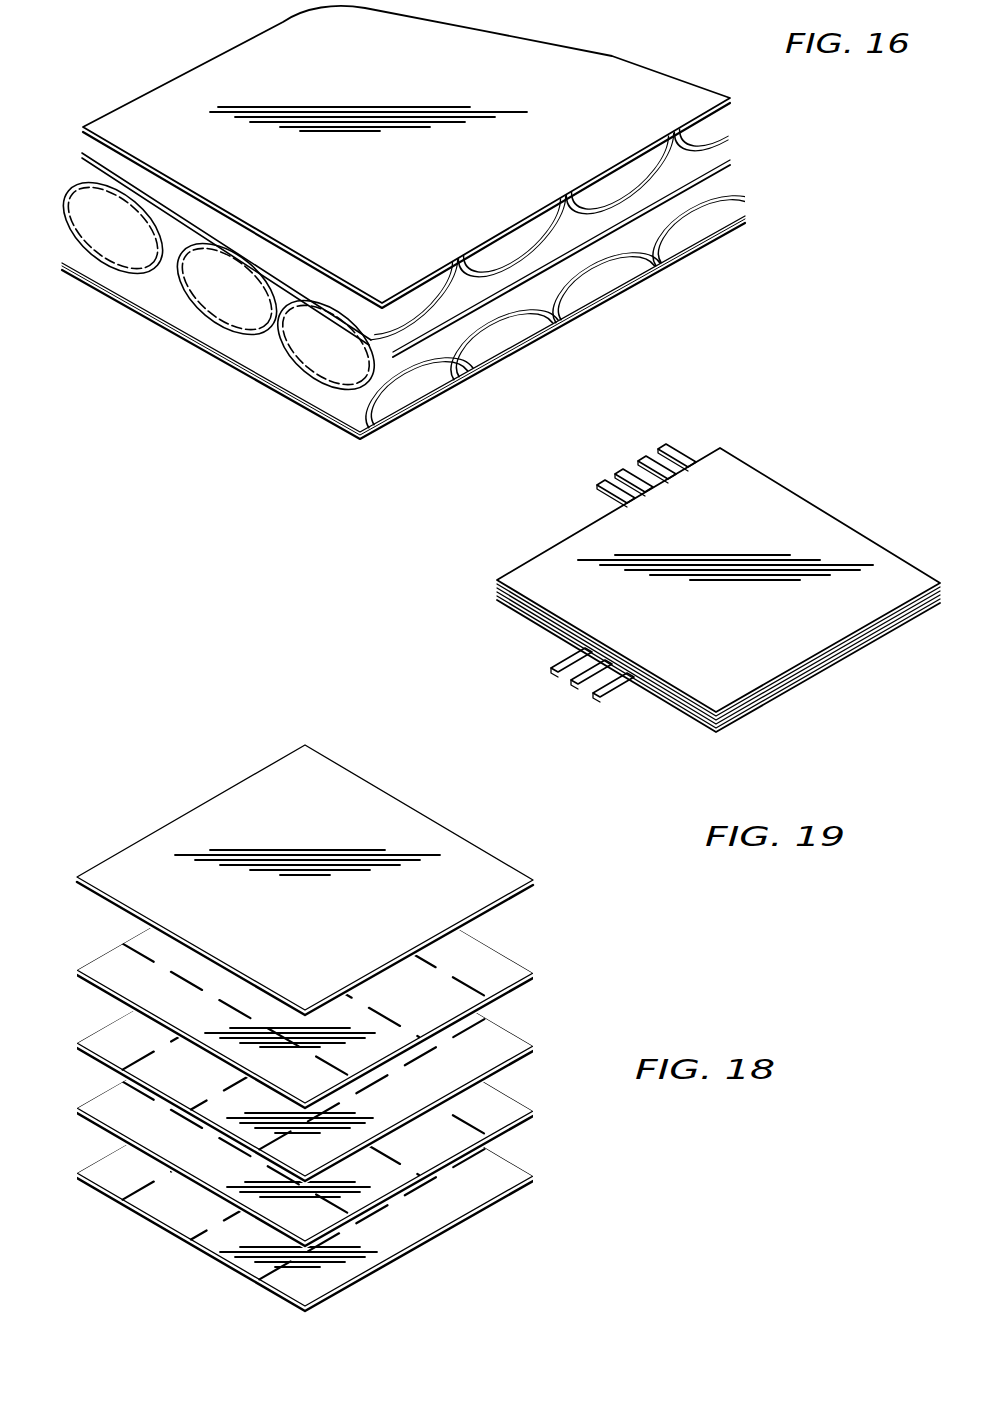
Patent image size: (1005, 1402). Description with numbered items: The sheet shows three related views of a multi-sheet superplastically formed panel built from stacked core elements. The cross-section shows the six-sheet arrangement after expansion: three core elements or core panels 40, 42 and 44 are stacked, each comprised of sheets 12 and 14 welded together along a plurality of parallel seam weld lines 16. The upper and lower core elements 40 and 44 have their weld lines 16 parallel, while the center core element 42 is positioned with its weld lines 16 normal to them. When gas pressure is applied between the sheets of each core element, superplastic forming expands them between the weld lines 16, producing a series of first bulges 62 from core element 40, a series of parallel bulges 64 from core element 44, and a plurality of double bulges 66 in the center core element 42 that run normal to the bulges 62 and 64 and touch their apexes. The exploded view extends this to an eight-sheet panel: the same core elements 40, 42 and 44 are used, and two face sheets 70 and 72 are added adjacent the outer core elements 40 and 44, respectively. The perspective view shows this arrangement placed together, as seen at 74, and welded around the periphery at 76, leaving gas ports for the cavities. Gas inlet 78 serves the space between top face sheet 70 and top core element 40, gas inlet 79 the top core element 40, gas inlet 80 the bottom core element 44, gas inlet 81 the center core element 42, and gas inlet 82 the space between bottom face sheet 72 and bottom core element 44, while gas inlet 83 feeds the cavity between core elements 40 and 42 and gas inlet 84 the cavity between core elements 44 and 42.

In FIG. 16, the sheet 12 is at (200, 66).
In FIG. 16, the sheet 14 is at (420, 403).
In FIG. 18, the seam weld lines 16 is at (468, 993).
In FIG. 16, the core element 40 is at (682, 62).
In FIG. 19, the core element 40 is at (847, 647).
In FIG. 18, the core element 40 is at (510, 953).
In FIG. 16, the center core element 42 is at (200, 283).
In FIG. 19, the center core element 42 is at (797, 680).
In FIG. 18, the center core element 42 is at (531, 1050).
In FIG. 16, the core element 44 is at (338, 430).
In FIG. 19, the core element 44 is at (758, 715).
In FIG. 18, the core element 44 is at (530, 1117).
In FIG. 16, the first bulges 62 is at (664, 181).
In FIG. 16, the bulges 64 is at (592, 312).
In FIG. 16, the double bulges 66 is at (114, 240).
In FIG. 19, the face sheet 70 is at (900, 568).
In FIG. 18, the face sheet 70 is at (388, 803).
In FIG. 19, the face sheet 72 is at (513, 610).
In FIG. 18, the face sheet 72 is at (360, 1278).
In FIG. 19, the assembled arrangement 74 is at (797, 505).
In FIG. 19, the periphery weld 76 is at (890, 617).
In FIG. 19, the gas inlet 78 is at (662, 448).
In FIG. 19, the gas inlet 79 is at (640, 460).
In FIG. 19, the gas inlet 80 is at (616, 473).
In FIG. 19, the gas inlet 81 is at (574, 682).
In FIG. 19, the gas inlet 82 is at (604, 488).
In FIG. 19, the gas inlet 83 is at (552, 666).
In FIG. 19, the gas inlet 84 is at (598, 694).